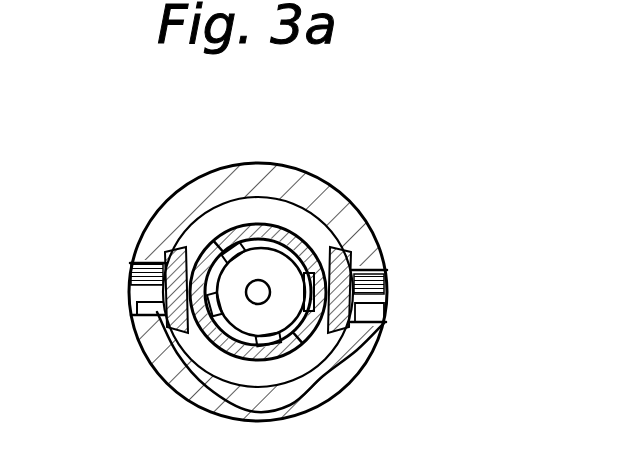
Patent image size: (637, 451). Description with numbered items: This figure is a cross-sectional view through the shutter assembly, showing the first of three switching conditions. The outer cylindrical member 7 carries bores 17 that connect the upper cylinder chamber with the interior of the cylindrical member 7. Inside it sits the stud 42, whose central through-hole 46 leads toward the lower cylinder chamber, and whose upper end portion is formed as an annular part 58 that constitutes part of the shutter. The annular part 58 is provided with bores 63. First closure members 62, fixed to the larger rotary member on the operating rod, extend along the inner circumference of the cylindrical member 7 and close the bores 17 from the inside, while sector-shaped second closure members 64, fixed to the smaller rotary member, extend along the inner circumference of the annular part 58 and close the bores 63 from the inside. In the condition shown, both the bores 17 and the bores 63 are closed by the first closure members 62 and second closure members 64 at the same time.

The cylindrical member 7 is at (358, 230).
The bores 17 is at (137, 308).
The stud 42 is at (283, 260).
The through-hole 46 is at (252, 300).
The annular part 58 is at (362, 372).
The first closure members 62 is at (165, 252).
The bores 63 is at (135, 285).
The second closure members 64 is at (217, 245).